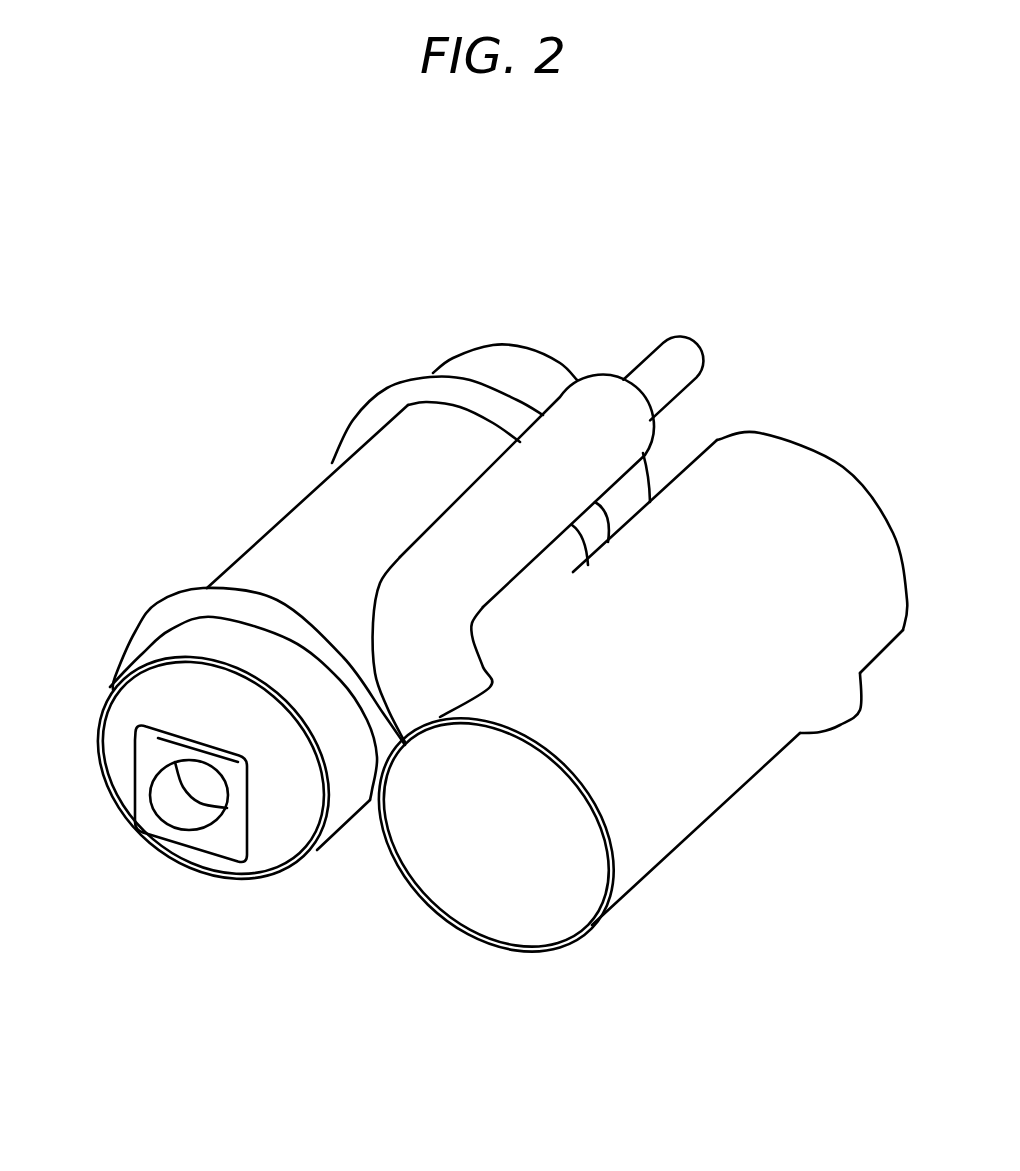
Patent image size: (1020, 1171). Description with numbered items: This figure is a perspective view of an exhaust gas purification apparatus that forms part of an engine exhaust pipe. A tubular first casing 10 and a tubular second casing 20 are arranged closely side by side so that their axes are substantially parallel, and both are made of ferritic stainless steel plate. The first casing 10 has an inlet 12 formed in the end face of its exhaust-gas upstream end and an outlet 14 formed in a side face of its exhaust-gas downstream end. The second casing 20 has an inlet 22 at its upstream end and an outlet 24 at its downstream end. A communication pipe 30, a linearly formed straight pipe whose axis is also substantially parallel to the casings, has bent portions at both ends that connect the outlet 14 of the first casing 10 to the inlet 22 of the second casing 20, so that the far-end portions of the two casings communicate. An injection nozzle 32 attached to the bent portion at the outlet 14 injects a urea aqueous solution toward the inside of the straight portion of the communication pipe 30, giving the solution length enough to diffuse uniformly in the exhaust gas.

The first casing 10 is at (287, 512).
The inlet 12 is at (173, 805).
The outlet 14 is at (560, 397).
The second casing 20 is at (720, 810).
The inlet 22 is at (450, 703).
The outlet 24 is at (823, 732).
The communication pipe 30 is at (480, 500).
The injection nozzle 32 is at (655, 343).